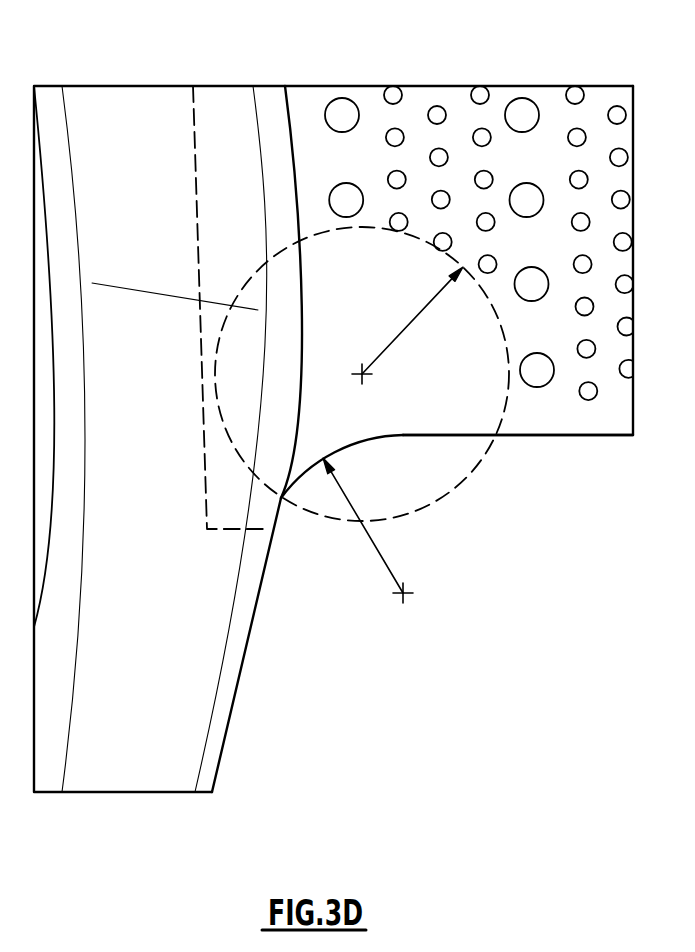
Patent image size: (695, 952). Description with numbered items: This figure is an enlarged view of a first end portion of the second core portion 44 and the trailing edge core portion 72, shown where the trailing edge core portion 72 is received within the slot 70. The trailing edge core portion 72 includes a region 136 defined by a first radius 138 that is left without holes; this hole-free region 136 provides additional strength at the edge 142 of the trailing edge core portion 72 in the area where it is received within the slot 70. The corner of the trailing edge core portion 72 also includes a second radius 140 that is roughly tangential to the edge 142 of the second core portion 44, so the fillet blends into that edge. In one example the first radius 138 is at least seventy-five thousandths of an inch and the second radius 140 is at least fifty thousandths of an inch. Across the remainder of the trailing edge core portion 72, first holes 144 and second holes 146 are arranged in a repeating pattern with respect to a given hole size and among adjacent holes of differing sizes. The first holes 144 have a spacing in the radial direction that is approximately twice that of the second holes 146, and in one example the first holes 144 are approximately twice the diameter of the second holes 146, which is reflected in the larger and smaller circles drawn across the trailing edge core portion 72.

The second core portion 44 is at (155, 682).
The slot 70 is at (203, 360).
The trailing edge core portion 72 is at (575, 417).
The region 136 is at (427, 387).
The first radius 138 is at (410, 320).
The second radius 140 is at (377, 547).
The edge 142 is at (248, 621).
The first holes 144 is at (352, 108).
The second holes 146 is at (487, 99).